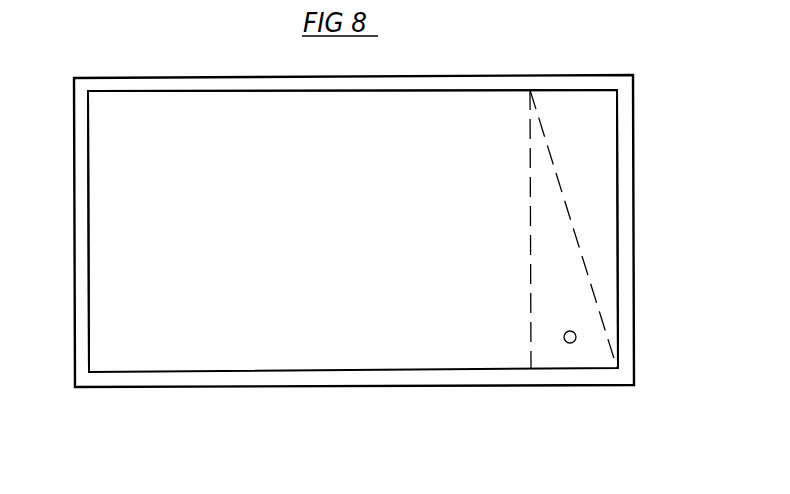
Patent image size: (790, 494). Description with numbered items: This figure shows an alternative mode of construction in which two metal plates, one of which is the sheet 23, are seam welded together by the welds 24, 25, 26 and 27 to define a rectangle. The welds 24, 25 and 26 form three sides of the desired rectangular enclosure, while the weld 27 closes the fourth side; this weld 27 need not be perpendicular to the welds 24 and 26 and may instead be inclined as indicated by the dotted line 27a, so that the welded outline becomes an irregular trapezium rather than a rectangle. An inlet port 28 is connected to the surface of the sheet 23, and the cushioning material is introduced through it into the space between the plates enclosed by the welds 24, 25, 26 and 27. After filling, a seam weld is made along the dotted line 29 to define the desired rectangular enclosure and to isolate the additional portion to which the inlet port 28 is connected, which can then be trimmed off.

The metal plate 23 is at (283, 385).
The weld 24 is at (178, 372).
The weld 25 is at (88, 268).
The weld 26 is at (290, 91).
The weld 27 is at (618, 243).
The dotted line 27a is at (568, 207).
The inlet port 28 is at (576, 337).
The dotted line 29 is at (530, 160).